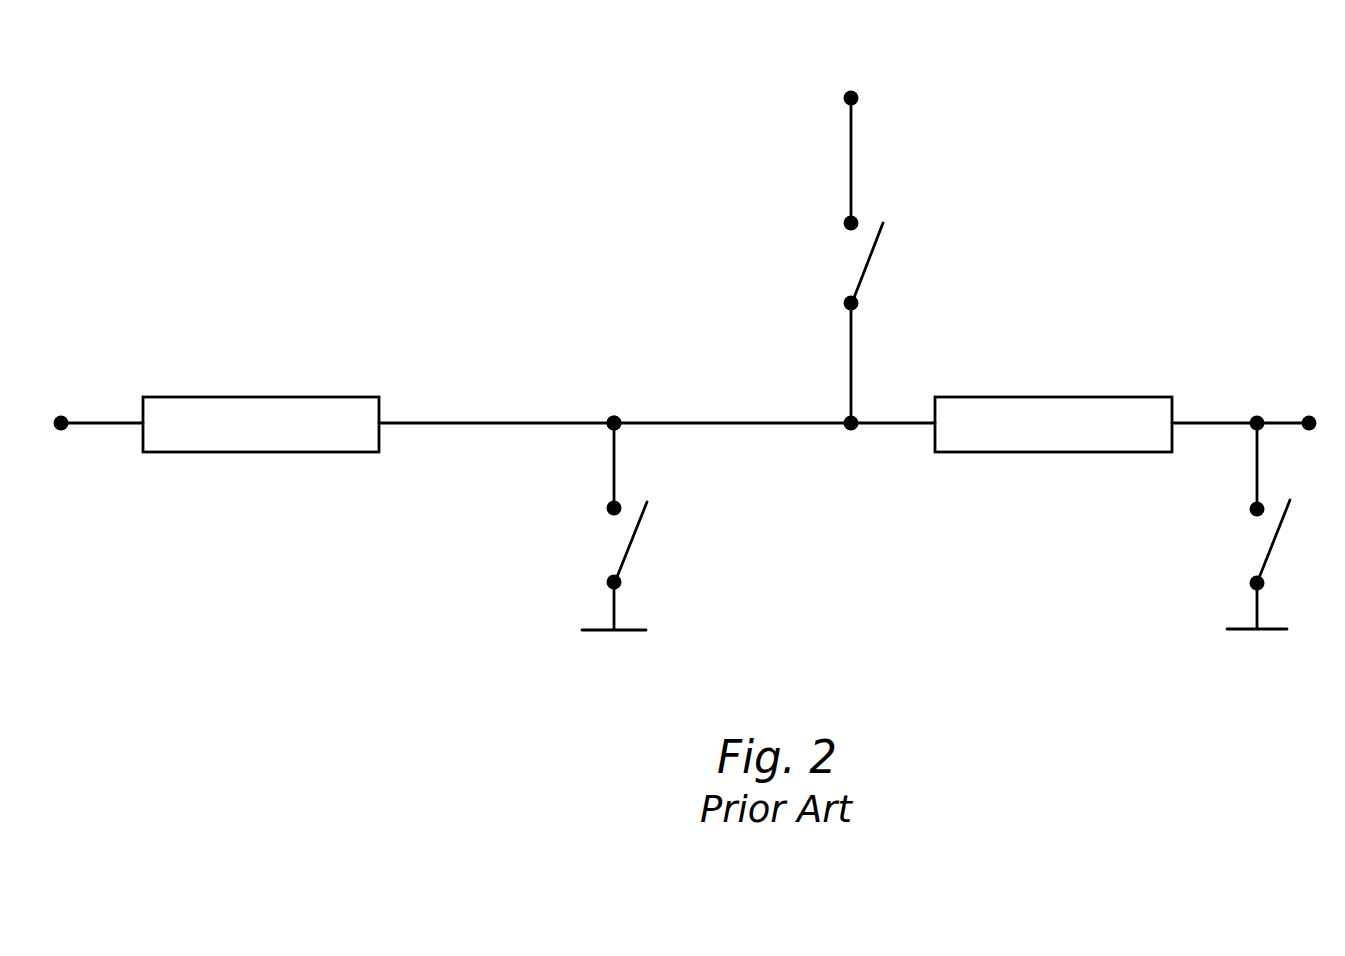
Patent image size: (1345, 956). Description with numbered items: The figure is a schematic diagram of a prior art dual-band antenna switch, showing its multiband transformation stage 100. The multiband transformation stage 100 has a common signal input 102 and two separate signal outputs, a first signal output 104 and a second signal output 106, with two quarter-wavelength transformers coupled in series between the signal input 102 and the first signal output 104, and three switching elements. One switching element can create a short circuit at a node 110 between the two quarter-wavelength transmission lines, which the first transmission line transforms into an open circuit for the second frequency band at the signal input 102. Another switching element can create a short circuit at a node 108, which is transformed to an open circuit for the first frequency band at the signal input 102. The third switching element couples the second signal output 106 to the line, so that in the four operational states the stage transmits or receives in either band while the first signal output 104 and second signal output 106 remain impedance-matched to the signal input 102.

The multiband transformation stage 100 is at (695, 361).
The common signal input 102 is at (66, 427).
The first signal output 104 is at (1310, 415).
The second signal output 106 is at (857, 96).
The node 108 is at (1255, 417).
The node 110 is at (618, 418).